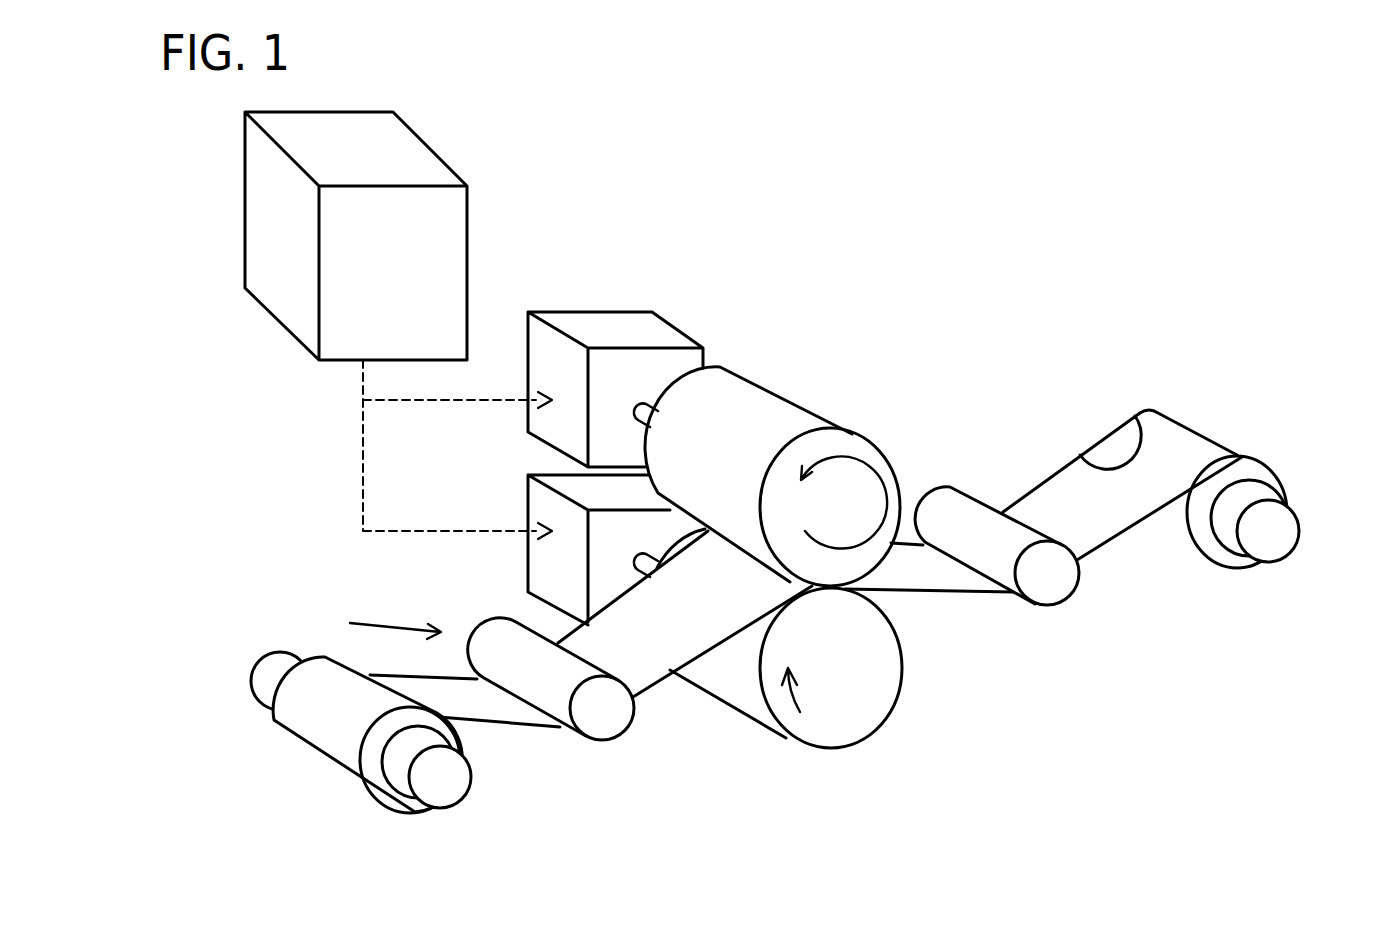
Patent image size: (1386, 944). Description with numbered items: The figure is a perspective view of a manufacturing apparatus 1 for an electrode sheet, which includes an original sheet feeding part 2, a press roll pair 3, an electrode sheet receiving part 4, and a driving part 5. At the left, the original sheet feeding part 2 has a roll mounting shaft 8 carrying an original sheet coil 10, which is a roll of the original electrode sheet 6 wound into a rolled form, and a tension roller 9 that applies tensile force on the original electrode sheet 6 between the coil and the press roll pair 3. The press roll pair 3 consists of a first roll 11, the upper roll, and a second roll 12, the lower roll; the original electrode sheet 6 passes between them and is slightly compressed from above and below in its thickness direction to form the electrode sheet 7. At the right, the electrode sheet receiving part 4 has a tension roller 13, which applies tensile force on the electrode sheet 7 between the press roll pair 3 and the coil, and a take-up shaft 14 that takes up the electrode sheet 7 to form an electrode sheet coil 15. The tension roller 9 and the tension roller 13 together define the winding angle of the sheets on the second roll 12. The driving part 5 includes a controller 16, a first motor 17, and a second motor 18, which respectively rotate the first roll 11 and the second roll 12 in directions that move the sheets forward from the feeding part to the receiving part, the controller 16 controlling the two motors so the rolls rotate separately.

The manufacturing apparatus 1 is at (1098, 196).
The original sheet feeding part 2 is at (645, 848).
The press roll pair 3 is at (952, 784).
The electrode sheet receiving part 4 is at (1042, 659).
The driving part 5 is at (406, 312).
The original electrode sheet 6 is at (642, 663).
The electrode sheet 7 is at (930, 572).
The roll mounting shaft 8 is at (448, 782).
The tension roller 9 is at (605, 723).
The original sheet coil 10 is at (308, 745).
The first roll 11 is at (792, 417).
The second roll 12 is at (902, 667).
The tension roller 13 is at (1047, 585).
The take-up shaft 14 is at (1265, 548).
The electrode sheet coil 15 is at (1270, 482).
The controller 16 is at (463, 219).
The first motor 17 is at (598, 333).
The second motor 18 is at (538, 513).